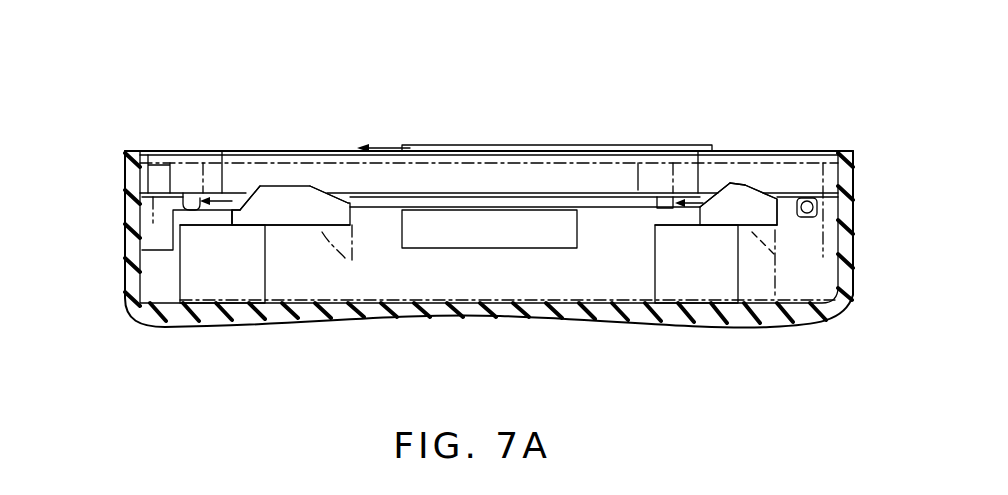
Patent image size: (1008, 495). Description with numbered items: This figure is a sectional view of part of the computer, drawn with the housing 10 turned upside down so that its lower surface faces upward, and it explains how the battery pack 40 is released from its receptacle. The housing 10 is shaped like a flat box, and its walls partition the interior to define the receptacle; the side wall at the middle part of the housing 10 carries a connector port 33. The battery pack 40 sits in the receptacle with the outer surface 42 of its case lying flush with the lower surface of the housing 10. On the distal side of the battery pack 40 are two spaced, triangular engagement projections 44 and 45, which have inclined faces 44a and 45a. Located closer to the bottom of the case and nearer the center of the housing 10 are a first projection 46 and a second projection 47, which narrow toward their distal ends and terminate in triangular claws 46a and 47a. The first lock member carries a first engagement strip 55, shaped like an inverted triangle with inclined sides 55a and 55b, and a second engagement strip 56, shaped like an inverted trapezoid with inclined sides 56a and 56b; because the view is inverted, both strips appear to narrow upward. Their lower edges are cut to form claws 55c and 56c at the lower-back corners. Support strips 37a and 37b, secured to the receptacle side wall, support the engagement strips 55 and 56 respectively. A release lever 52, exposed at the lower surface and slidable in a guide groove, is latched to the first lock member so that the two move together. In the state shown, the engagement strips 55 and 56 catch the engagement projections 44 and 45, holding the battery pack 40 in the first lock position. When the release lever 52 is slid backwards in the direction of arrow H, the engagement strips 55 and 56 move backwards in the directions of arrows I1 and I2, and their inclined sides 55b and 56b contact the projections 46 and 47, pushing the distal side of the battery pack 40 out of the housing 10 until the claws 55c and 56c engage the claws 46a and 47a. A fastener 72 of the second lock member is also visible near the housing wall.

The housing 10 is at (838, 310).
The connector port 33 is at (528, 248).
The support strip 37a is at (708, 280).
The support strip 37b is at (245, 285).
The battery pack 40 is at (254, 140).
The outer surface 42 is at (150, 150).
The first engagement projection 44 is at (820, 235).
The inclined face 44a is at (770, 250).
The second engagement projection 45 is at (356, 245).
The inclined face 45a is at (342, 258).
The first projection 46 is at (637, 185).
The claw 46a is at (657, 212).
The second projection 47 is at (181, 175).
The claw 47a is at (183, 199).
The release lever 52 is at (638, 147).
The first engagement strip 55 is at (722, 220).
The inclined side 55a is at (778, 195).
The inclined side 55b is at (718, 183).
The claw 55c is at (750, 185).
The second engagement strip 56 is at (248, 215).
The inclined side 56a is at (350, 205).
The inclined side 56b is at (252, 200).
The claw 56c is at (234, 208).
The fastener 72 is at (817, 205).
The arrow H is at (385, 147).
The arrow I1 is at (697, 151).
The arrow I2 is at (222, 150).